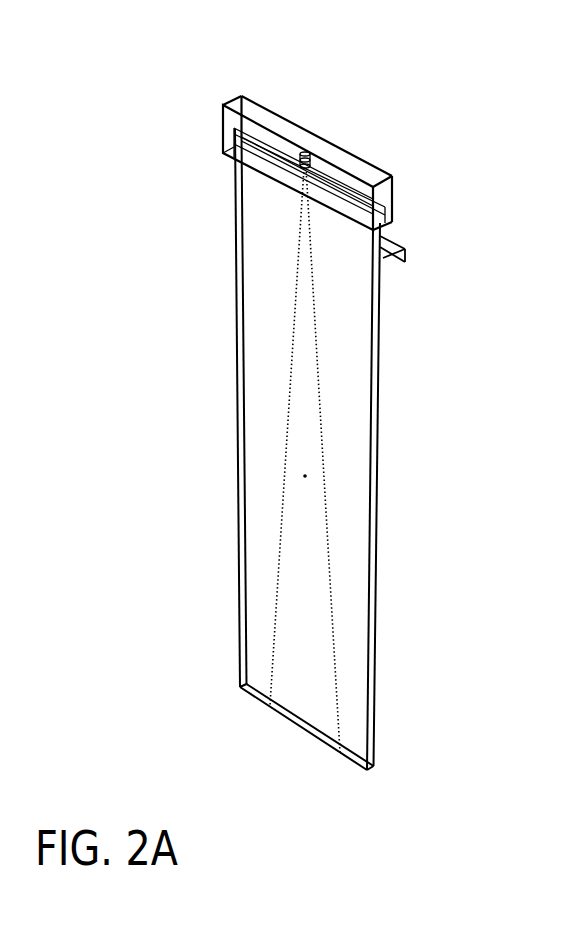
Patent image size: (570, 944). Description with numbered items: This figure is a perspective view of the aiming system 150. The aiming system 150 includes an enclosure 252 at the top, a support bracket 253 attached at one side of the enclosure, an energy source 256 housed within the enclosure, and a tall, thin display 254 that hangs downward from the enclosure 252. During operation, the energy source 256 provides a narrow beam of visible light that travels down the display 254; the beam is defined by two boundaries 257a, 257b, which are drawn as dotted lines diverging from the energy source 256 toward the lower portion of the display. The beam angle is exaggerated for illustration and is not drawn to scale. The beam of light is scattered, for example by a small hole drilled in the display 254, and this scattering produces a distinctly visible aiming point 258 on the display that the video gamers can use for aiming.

The aiming system 150 is at (160, 170).
The enclosure 252 is at (392, 208).
The support bracket 253 is at (405, 248).
The display 254 is at (377, 480).
The energy source 256 is at (311, 161).
The boundary 257a is at (288, 402).
The boundary 257b is at (318, 402).
The aiming point 258 is at (305, 476).